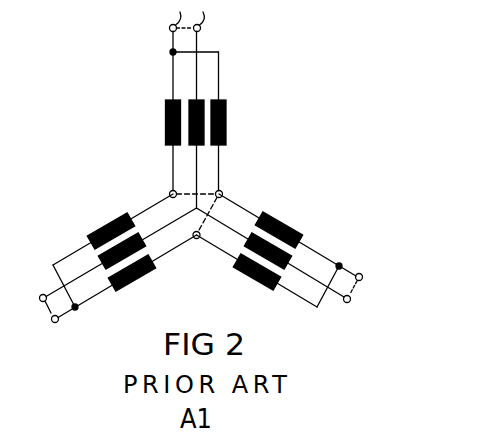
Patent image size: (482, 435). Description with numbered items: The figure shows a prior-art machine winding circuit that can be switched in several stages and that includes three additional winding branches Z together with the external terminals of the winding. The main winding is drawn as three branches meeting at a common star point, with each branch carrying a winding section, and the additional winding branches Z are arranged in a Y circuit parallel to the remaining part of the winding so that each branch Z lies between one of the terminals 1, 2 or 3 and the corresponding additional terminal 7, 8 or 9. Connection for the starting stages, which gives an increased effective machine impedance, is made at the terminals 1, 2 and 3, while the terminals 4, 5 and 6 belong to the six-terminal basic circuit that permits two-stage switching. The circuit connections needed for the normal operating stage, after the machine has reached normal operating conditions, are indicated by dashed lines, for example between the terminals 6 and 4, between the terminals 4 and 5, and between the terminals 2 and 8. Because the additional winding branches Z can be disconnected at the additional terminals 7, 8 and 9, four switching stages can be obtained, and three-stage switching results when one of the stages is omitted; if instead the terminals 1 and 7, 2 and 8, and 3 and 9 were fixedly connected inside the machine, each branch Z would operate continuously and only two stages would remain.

The terminal 1 is at (179, 16).
The additional terminal 7 is at (197, 16).
The terminal 6 is at (170, 192).
The terminal 4 is at (222, 192).
The terminal 5 is at (198, 239).
The additional terminal 9 is at (40, 298).
The terminal 3 is at (52, 322).
The terminal 2 is at (362, 279).
The additional terminal 8 is at (350, 302).
The additional winding branch Z is at (198, 101).